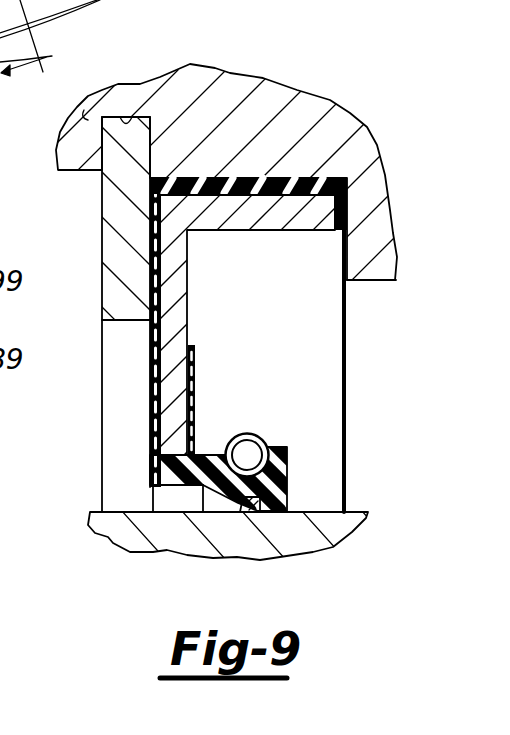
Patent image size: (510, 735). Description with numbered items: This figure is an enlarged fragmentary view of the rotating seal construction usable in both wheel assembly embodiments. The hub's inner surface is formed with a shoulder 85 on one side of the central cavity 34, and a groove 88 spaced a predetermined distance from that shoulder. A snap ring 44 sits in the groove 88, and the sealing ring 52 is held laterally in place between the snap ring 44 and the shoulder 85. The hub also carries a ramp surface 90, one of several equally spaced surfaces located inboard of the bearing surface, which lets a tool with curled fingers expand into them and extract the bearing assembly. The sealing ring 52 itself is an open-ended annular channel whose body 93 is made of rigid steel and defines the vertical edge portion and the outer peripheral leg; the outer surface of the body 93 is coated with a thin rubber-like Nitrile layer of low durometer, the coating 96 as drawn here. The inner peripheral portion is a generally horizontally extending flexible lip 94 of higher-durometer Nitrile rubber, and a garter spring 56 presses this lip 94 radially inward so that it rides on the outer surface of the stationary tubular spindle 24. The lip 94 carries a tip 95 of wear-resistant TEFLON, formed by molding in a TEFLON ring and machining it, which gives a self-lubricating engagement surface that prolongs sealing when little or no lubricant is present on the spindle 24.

The tubular spindle 24 is at (127, 532).
The cavity 34 is at (389, 412).
The snap ring 44 is at (103, 230).
The sealing ring 52 is at (151, 409).
The garter spring 56 is at (258, 438).
The shoulder 85 is at (334, 266).
The groove 88 is at (172, 80).
The ramp surface 90 is at (84, 110).
The body 93 is at (160, 347).
The flexible lip 94 is at (210, 455).
The tip 95 is at (268, 512).
The inner sealing strip 96 is at (160, 277).